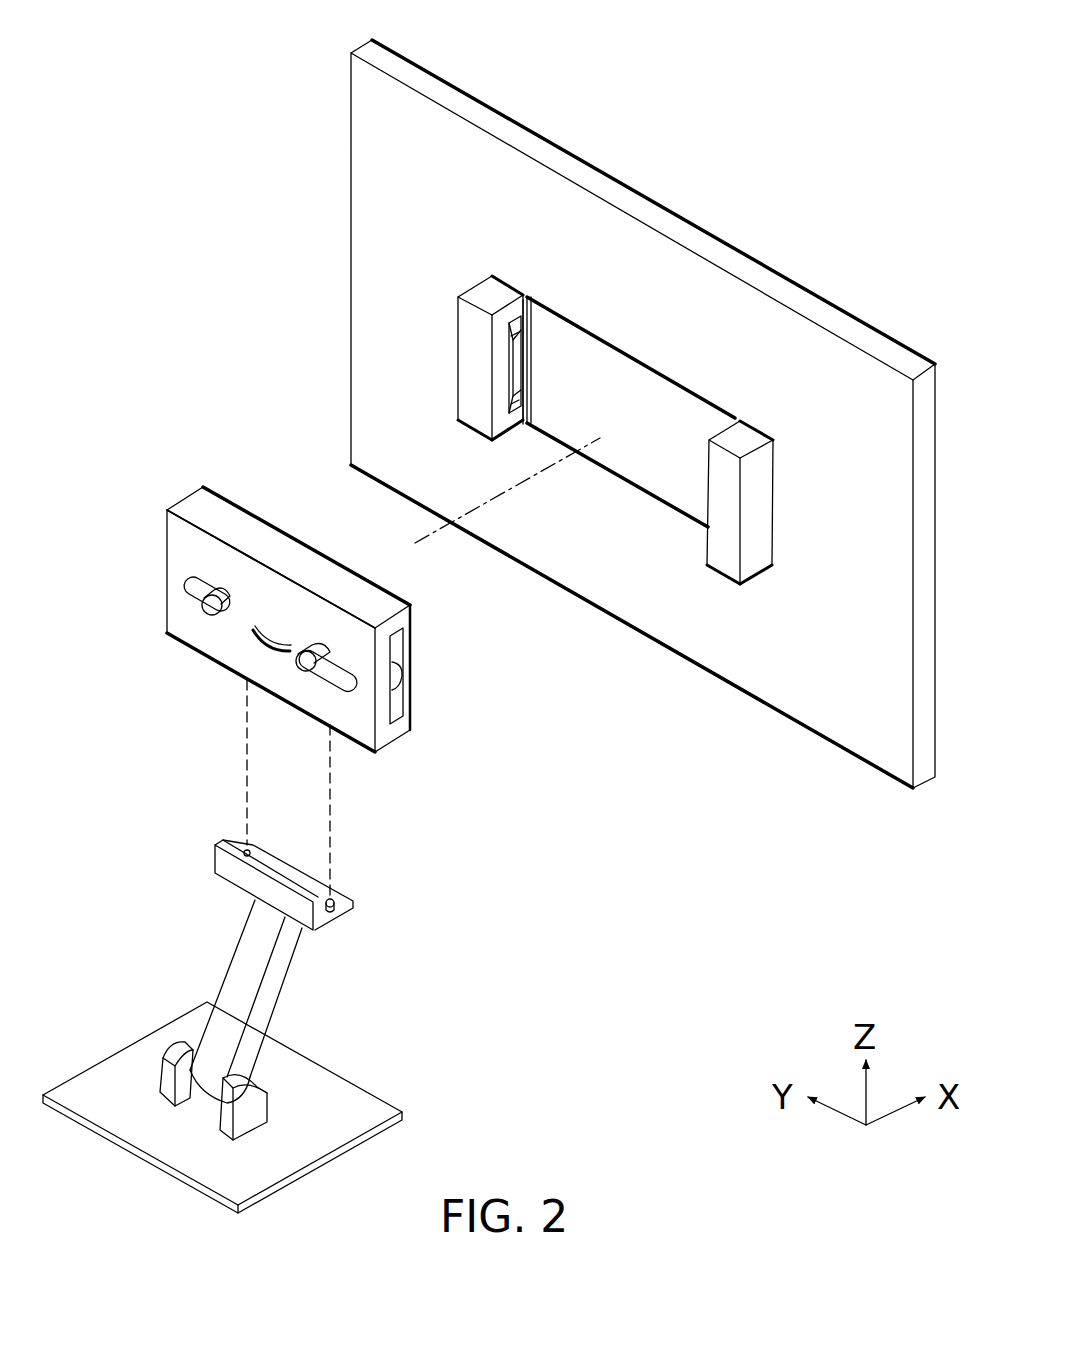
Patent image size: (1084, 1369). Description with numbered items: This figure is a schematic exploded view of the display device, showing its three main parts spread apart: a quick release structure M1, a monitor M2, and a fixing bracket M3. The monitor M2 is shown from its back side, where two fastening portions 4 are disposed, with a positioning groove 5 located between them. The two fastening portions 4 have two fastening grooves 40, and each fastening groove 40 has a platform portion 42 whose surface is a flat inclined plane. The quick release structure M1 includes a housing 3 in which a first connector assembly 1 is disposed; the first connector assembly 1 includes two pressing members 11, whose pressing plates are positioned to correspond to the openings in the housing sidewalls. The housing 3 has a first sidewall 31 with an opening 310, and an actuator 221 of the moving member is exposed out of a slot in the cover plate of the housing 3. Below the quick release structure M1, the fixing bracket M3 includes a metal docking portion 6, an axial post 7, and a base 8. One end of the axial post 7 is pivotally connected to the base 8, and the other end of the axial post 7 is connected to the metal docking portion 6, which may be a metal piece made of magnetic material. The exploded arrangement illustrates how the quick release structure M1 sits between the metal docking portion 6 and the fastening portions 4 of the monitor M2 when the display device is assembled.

The first connector assembly 1 is at (242, 669).
The housing 3 is at (245, 522).
The fastening portions 4 is at (468, 430).
The positioning groove 5 is at (628, 478).
The metal docking portion 6 is at (293, 866).
The axial post 7 is at (283, 981).
The base 8 is at (351, 1086).
The pressing members 11 is at (236, 739).
The first sidewall 31 is at (395, 735).
The fastening grooves 40 is at (519, 400).
The platform portion 42 is at (513, 341).
The actuator 221 is at (270, 632).
The opening 310 is at (400, 672).
The quick release structure M1 is at (288, 616).
The monitor M2 is at (335, 256).
The fixing bracket M3 is at (231, 1001).